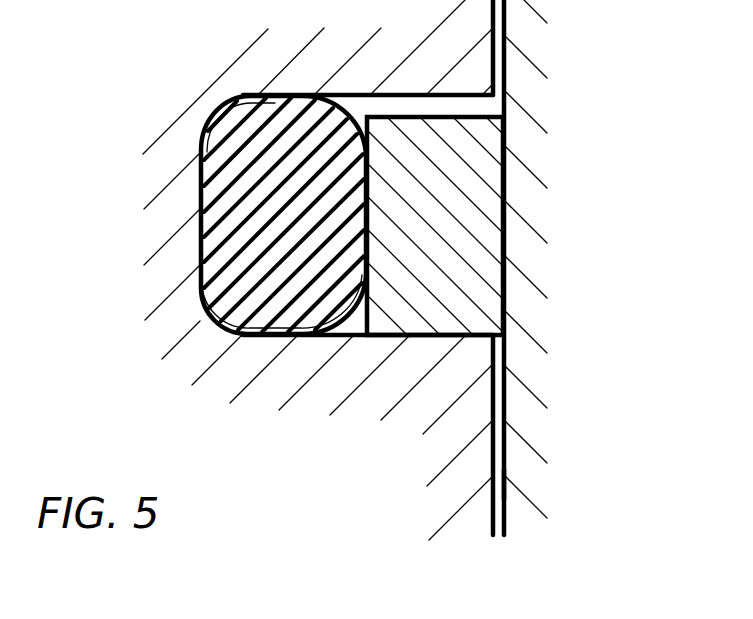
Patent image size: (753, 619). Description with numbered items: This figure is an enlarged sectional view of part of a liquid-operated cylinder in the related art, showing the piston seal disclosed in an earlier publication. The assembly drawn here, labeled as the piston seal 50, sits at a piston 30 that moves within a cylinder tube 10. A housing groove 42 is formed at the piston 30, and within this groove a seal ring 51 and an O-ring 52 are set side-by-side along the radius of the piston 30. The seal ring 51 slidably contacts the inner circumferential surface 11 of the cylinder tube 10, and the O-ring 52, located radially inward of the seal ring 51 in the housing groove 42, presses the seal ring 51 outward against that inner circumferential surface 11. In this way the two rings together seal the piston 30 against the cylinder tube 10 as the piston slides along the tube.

The cylinder tube 10 is at (524, 510).
The inner circumferential surface 11 is at (506, 487).
The piston 30 is at (458, 503).
The housing groove 42 is at (245, 94).
The sealing device 50 is at (354, 175).
The seal ring 51 is at (487, 238).
The O-ring 52 is at (218, 221).